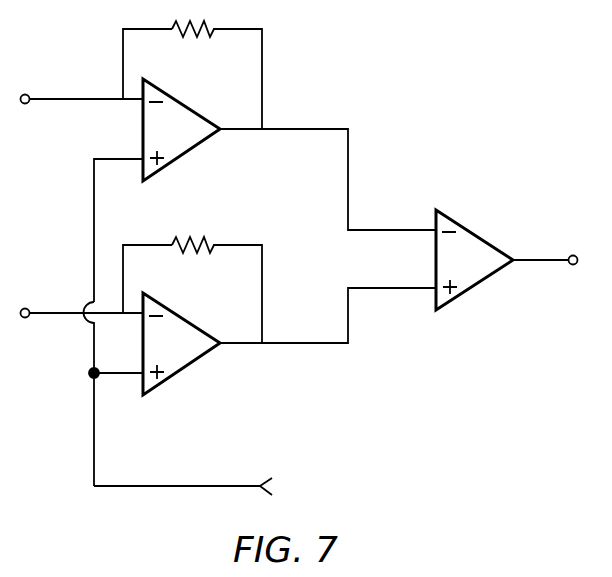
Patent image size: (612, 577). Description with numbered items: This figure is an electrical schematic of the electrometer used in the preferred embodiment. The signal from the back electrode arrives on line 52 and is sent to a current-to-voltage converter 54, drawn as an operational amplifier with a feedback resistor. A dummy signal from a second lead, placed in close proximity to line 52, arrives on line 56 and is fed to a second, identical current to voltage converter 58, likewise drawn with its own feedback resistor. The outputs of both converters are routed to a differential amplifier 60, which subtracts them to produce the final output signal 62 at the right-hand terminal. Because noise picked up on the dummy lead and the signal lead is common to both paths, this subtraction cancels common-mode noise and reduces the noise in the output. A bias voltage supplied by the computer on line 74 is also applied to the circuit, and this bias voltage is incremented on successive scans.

The line 52 is at (65, 98).
The current-to-voltage converter 54 is at (193, 150).
The line 56 is at (65, 312).
The second current to voltage converter 58 is at (193, 363).
The differential amplifier 60 is at (480, 233).
The final output signal 62 is at (537, 260).
The line 74 is at (200, 485).